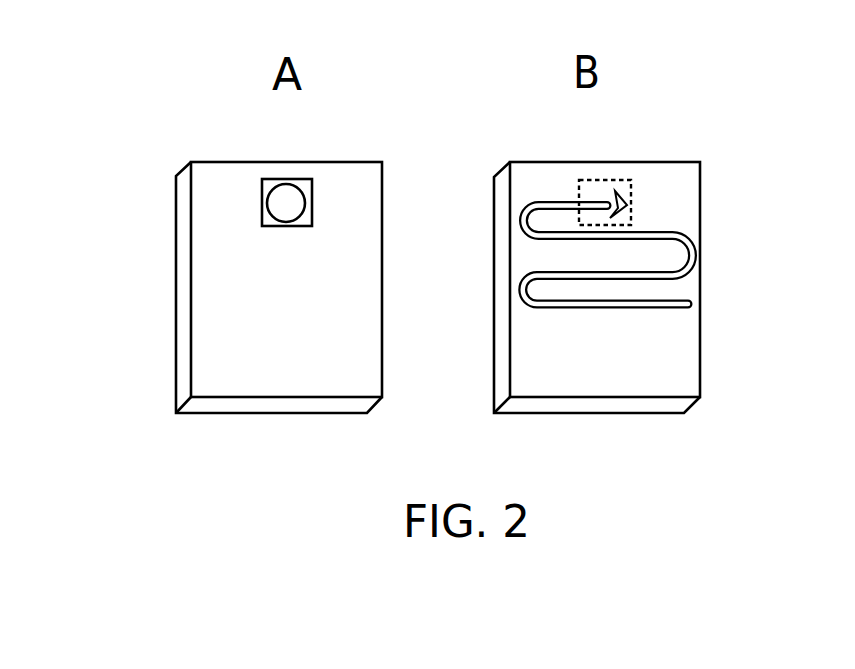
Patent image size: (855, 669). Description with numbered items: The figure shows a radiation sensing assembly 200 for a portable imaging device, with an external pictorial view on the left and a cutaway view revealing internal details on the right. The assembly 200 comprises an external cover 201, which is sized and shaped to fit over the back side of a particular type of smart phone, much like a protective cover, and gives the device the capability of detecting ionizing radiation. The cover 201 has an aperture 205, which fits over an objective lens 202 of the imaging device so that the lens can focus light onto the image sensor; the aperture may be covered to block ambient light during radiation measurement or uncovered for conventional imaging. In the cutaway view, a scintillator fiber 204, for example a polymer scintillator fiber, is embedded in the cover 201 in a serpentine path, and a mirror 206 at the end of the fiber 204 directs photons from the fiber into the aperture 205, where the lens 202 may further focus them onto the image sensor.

In FIG. 2A, the radiation sensing assembly 200 is at (152, 59).
In FIG. 2A, the external cover 201 is at (235, 414).
In FIG. 2B, the external cover 201 is at (597, 287).
In FIG. 2A, the objective lens 202 is at (268, 179).
In FIG. 2B, the scintillator fiber 204 is at (684, 237).
In FIG. 2B, the aperture 205 is at (588, 179).
In FIG. 2B, the mirror 206 is at (616, 191).